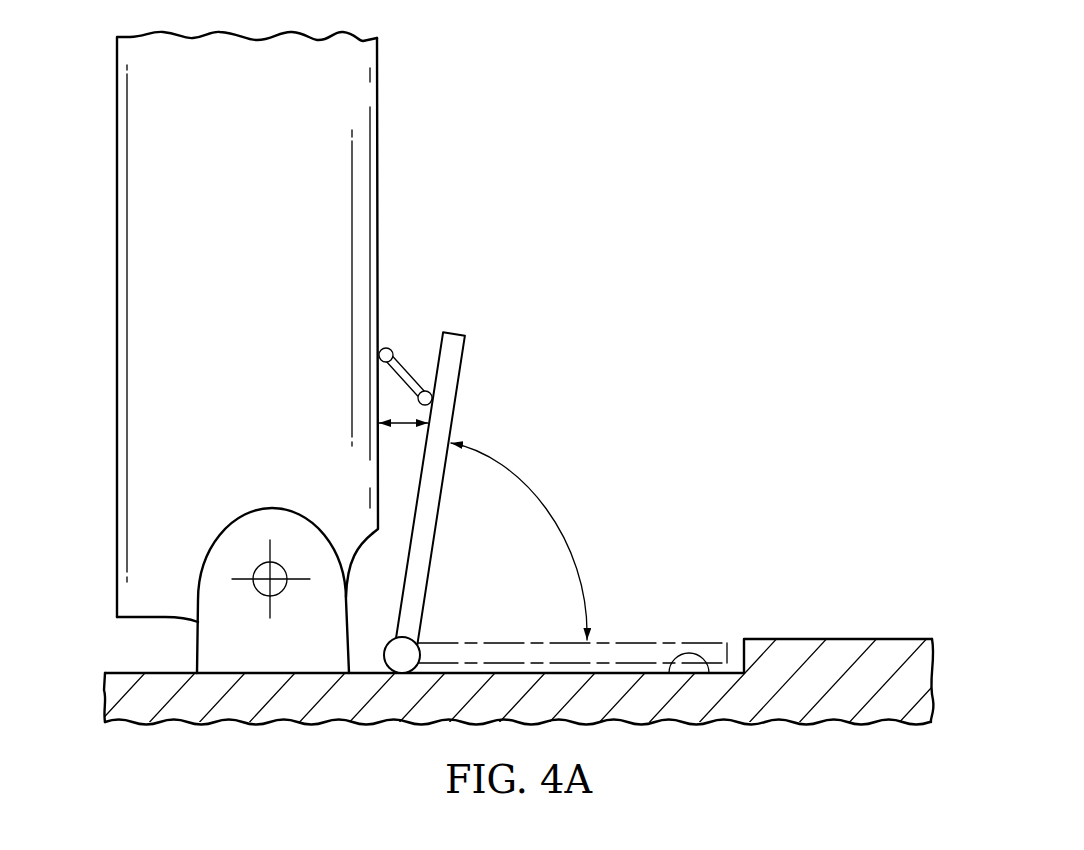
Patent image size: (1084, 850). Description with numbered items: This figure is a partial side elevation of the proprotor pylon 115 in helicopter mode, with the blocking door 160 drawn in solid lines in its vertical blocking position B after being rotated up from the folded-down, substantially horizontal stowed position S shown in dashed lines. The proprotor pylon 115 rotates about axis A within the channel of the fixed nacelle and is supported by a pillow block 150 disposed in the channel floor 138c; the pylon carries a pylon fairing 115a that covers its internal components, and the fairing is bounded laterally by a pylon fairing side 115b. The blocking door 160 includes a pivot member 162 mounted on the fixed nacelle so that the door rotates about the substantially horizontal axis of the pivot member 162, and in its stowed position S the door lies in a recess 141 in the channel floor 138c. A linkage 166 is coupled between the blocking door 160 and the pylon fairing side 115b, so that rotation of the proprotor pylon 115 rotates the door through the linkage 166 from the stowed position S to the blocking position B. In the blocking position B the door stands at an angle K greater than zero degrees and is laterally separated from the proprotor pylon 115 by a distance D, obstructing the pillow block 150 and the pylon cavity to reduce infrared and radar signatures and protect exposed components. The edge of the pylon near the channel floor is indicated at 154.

The proprotor pylon 115 is at (375, 95).
The pylon fairing 115a is at (379, 202).
The pylon fairing side 115b is at (382, 348).
The linkage 166 is at (413, 372).
The blocking door 160 is at (457, 330).
The pivot member 162 is at (398, 655).
The pillow block 150 is at (197, 637).
The wall bottom edge 154 is at (121, 627).
The channel floor 138c is at (181, 716).
The recess 141 is at (695, 678).
The axis A is at (263, 572).
The blocking position B is at (498, 378).
The distance D is at (403, 428).
The angle K is at (519, 541).
The stowed position S is at (635, 641).